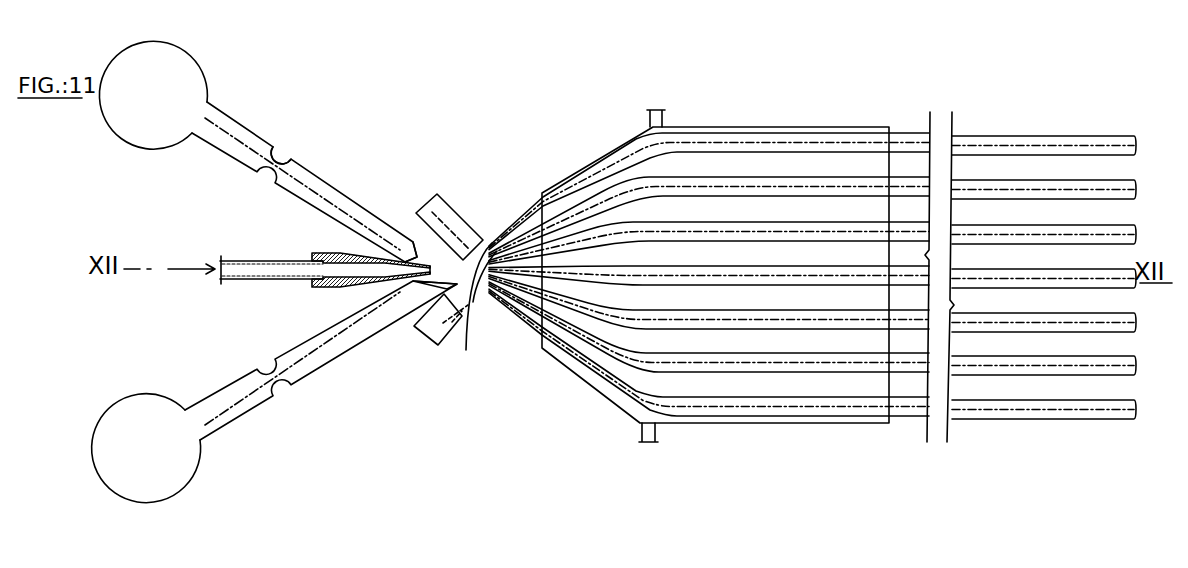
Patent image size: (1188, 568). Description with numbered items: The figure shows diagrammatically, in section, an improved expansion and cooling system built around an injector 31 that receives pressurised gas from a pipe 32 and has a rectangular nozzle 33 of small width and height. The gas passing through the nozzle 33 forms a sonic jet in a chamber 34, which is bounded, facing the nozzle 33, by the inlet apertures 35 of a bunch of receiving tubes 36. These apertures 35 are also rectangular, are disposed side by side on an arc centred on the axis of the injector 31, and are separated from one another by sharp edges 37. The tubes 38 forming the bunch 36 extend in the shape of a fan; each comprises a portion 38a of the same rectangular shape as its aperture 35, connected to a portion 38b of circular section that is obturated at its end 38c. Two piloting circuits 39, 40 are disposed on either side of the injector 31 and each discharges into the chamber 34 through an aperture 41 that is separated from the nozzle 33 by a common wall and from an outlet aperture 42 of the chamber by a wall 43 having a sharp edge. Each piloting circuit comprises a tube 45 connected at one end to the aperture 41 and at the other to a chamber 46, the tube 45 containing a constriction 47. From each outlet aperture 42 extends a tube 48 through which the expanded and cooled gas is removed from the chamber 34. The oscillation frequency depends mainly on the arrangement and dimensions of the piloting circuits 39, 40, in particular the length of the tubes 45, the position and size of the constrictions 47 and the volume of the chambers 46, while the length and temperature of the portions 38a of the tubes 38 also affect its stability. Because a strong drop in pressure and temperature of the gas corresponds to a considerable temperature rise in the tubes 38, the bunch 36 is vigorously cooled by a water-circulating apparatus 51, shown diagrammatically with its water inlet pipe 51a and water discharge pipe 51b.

The injector 31 is at (318, 289).
The pipe 32 is at (243, 279).
The rectangular nozzle 33 is at (423, 277).
The chamber 34 is at (486, 242).
The inlet aperture 35 is at (490, 297).
The bunch of receiving tubes 36 is at (979, 121).
The sharp edge 37 is at (467, 330).
The tube 38 is at (1092, 219).
The rectangular portion of tube 38a is at (528, 320).
The circular-section portion of tube 38b is at (827, 412).
The obturated end 38c is at (1136, 416).
The piloting circuit 39 is at (223, 453).
The piloting circuit 40 is at (190, 164).
The aperture 41 is at (444, 254).
The outlet aperture 42 is at (446, 254).
The wall 43 is at (417, 328).
The tube 45 is at (368, 213).
The chamber 46 is at (196, 64).
The constriction 47 is at (284, 150).
The tube 48 is at (445, 330).
The water-circulating apparatus 51 is at (815, 120).
The water inlet pipe 51a is at (663, 113).
The water discharge pipe 51b is at (650, 440).